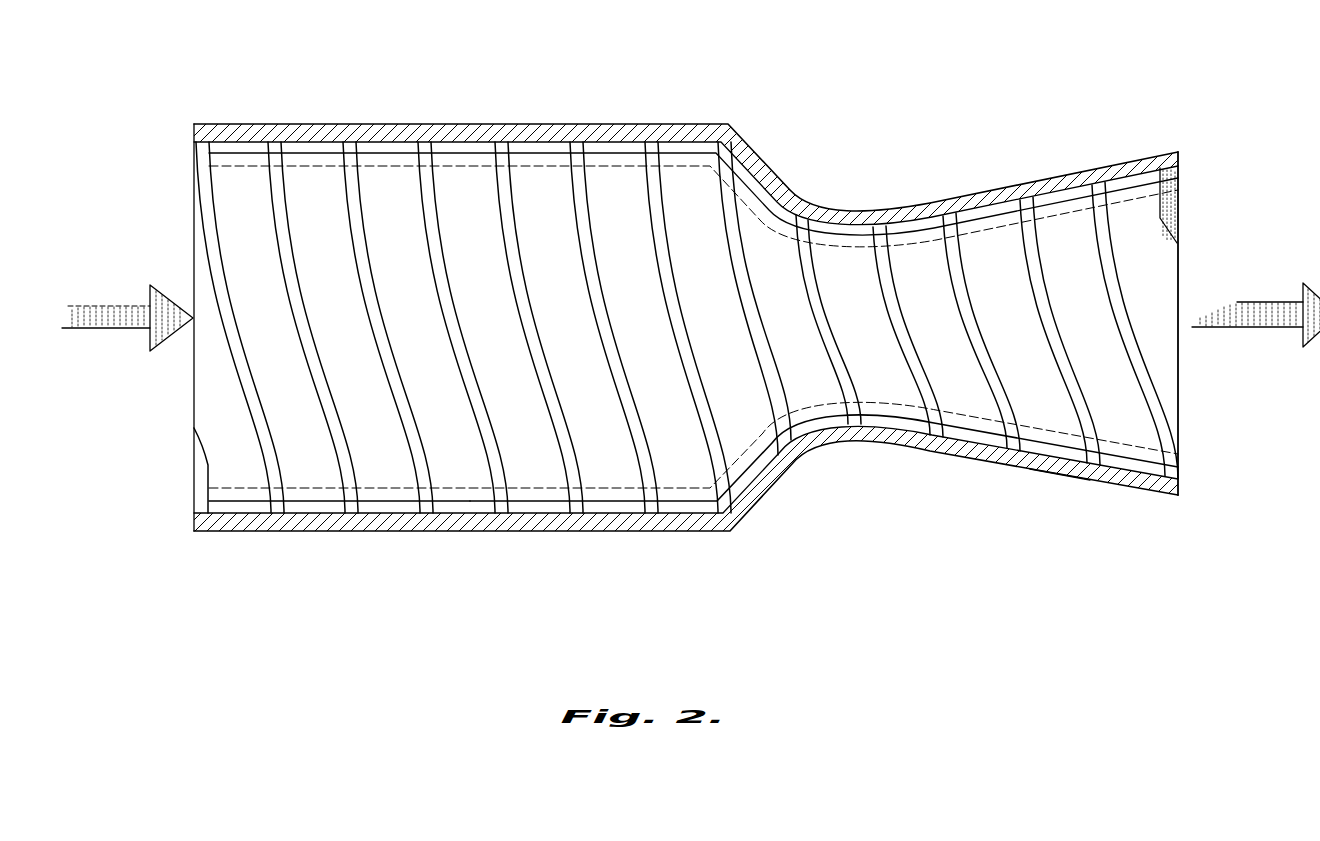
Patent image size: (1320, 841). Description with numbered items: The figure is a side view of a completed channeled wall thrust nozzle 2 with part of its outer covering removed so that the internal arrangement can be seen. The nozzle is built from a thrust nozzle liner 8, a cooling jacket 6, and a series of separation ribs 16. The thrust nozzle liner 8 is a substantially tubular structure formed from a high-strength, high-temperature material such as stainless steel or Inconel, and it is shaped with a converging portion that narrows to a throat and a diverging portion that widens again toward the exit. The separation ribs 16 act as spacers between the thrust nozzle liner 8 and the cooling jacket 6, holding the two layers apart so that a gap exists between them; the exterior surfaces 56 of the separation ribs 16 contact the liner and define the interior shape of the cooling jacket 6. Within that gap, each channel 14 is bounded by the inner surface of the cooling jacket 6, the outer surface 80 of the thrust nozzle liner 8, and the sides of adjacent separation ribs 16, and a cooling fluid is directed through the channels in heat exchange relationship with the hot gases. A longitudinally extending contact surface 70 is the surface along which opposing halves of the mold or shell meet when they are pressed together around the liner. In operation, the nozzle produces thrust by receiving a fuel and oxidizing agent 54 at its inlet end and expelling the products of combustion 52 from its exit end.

The channeled wall thrust nozzle 2 is at (763, 102).
The cooling jacket 6 is at (308, 133).
The thrust nozzle liner 8 is at (233, 500).
The channel 14 is at (313, 482).
The separation rib 16 is at (203, 148).
The products of combustion 52 is at (1243, 302).
The fuel and oxidizing agent 54 is at (90, 306).
The exterior surfaces of the channel separation ribs 56 is at (498, 530).
The contact surface 70 is at (1057, 465).
The outer surface of the thrust nozzle liner 80 is at (687, 500).